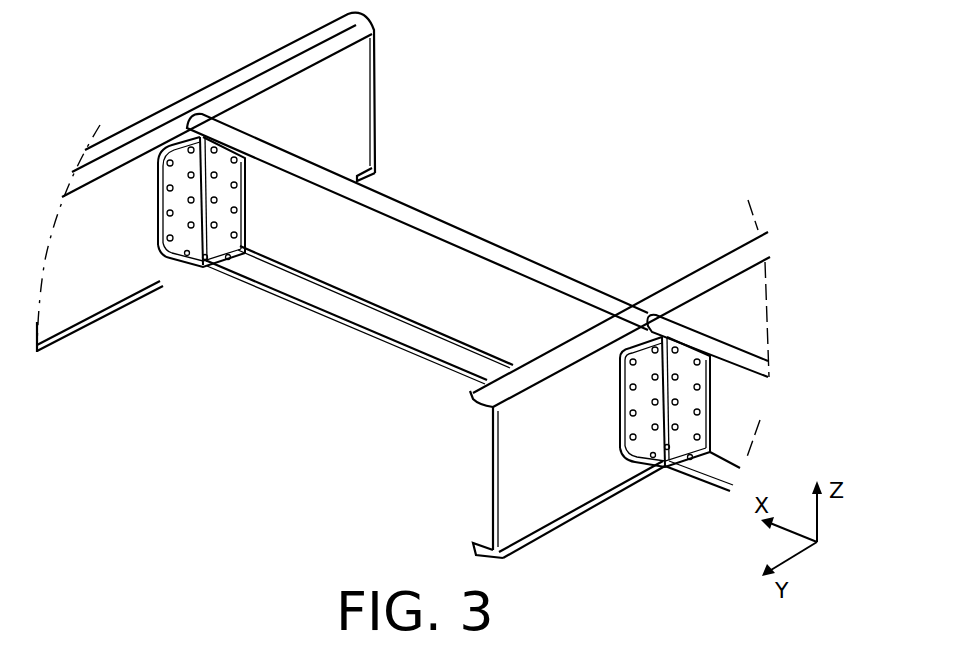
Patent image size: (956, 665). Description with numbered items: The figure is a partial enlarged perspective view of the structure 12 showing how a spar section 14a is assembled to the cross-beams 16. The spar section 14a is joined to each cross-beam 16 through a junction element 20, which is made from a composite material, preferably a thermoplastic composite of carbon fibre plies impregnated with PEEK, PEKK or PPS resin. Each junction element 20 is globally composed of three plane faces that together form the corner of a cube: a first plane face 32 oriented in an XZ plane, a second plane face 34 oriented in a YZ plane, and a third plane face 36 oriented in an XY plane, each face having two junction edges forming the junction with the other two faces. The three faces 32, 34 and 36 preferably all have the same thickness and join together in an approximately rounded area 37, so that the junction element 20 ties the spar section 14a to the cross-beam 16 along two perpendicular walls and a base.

The vehicle frame assembly 12 is at (678, 69).
The spar section 14a is at (453, 276).
The cross-beam 16 is at (344, 114).
The junction element 20 is at (200, 264).
The first plane face 32 is at (243, 202).
The second plane face 34 is at (172, 200).
The third plane face 36 is at (218, 262).
The rounded area 37 is at (204, 258).